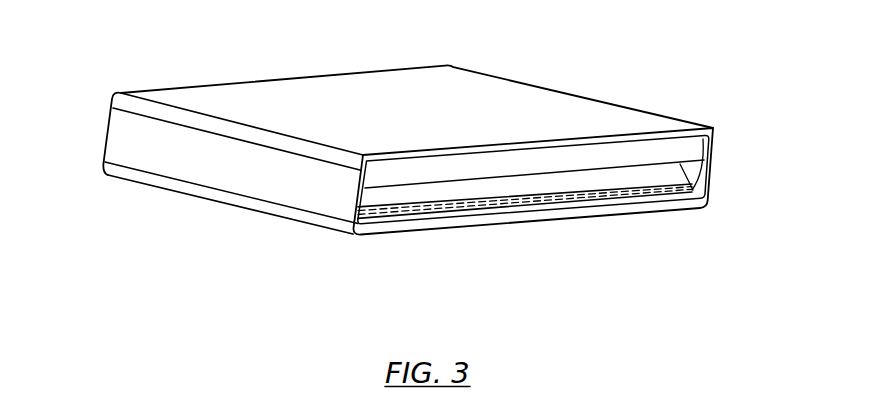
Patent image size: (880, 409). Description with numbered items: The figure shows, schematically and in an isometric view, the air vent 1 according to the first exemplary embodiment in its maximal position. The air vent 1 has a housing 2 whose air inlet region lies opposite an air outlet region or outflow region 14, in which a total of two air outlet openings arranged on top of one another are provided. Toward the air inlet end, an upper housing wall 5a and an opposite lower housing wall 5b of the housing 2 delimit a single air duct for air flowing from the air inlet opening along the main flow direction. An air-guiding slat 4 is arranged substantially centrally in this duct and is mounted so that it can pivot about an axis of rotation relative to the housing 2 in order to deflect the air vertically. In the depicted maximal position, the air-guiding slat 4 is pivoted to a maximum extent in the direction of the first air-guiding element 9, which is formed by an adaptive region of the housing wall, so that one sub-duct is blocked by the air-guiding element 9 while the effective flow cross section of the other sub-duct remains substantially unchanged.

The air vent 1 is at (331, 36).
The housing 2 is at (130, 145).
The air-guiding slat 4 is at (657, 180).
The upper housing wall 5a is at (493, 92).
The lower housing wall 5b is at (193, 197).
The first air-guiding element 9 is at (650, 152).
The air outlet region 14 is at (295, 240).